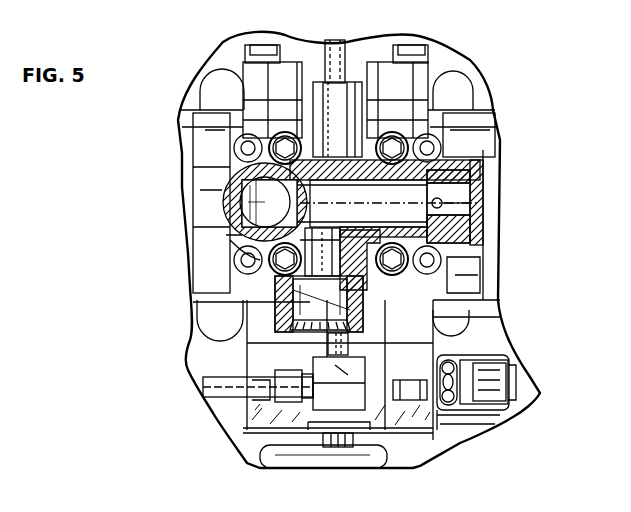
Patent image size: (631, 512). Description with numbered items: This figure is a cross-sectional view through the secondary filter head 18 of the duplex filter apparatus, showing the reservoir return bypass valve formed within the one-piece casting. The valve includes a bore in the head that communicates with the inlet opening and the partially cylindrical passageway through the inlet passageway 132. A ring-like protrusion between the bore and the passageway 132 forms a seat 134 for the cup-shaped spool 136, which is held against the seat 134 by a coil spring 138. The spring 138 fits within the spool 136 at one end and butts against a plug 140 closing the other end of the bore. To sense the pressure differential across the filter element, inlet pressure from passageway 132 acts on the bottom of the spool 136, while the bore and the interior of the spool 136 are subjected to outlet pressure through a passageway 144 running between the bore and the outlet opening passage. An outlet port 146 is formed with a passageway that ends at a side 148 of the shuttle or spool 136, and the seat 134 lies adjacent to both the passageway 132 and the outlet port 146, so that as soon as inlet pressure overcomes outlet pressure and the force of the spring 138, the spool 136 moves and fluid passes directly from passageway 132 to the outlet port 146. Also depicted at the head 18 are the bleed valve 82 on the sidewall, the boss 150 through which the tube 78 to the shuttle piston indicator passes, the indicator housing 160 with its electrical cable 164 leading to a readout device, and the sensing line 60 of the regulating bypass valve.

The secondary filter head 18 is at (205, 341).
The sensing line 60 is at (477, 423).
The tube 78 is at (348, 43).
The bleed valve 82 is at (202, 378).
The passageway 132 is at (214, 199).
The seat 134 is at (228, 232).
The spool 136 is at (233, 161).
The coil spring 138 is at (492, 226).
The plug 140 is at (488, 186).
The passageway 144 is at (483, 210).
The outlet port 146 is at (300, 313).
The side of shuttle 148 is at (232, 246).
The boss 150 is at (323, 42).
The housing 160 is at (410, 423).
The electrical cable 164 is at (534, 385).